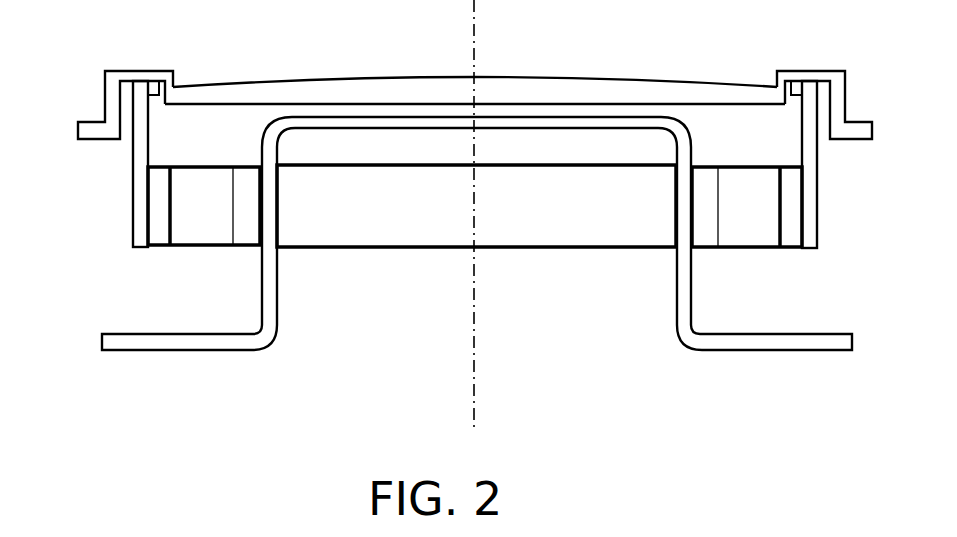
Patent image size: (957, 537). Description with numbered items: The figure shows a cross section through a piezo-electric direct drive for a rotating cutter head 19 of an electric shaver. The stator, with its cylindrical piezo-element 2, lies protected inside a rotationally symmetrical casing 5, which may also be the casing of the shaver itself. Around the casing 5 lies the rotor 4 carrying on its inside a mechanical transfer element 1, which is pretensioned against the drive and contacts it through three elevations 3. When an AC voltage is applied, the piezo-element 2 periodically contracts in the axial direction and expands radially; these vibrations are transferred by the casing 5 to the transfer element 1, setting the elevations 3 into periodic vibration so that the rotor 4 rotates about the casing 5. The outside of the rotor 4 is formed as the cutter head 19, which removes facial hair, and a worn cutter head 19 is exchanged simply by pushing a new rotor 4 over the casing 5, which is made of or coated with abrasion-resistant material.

The mechanical transfer element 1 is at (210, 193).
The piezo-element 2 is at (383, 226).
The elevations 3 is at (707, 193).
The rotor 4 is at (160, 232).
The casing 5 is at (780, 340).
The cutter head 19 is at (282, 88).